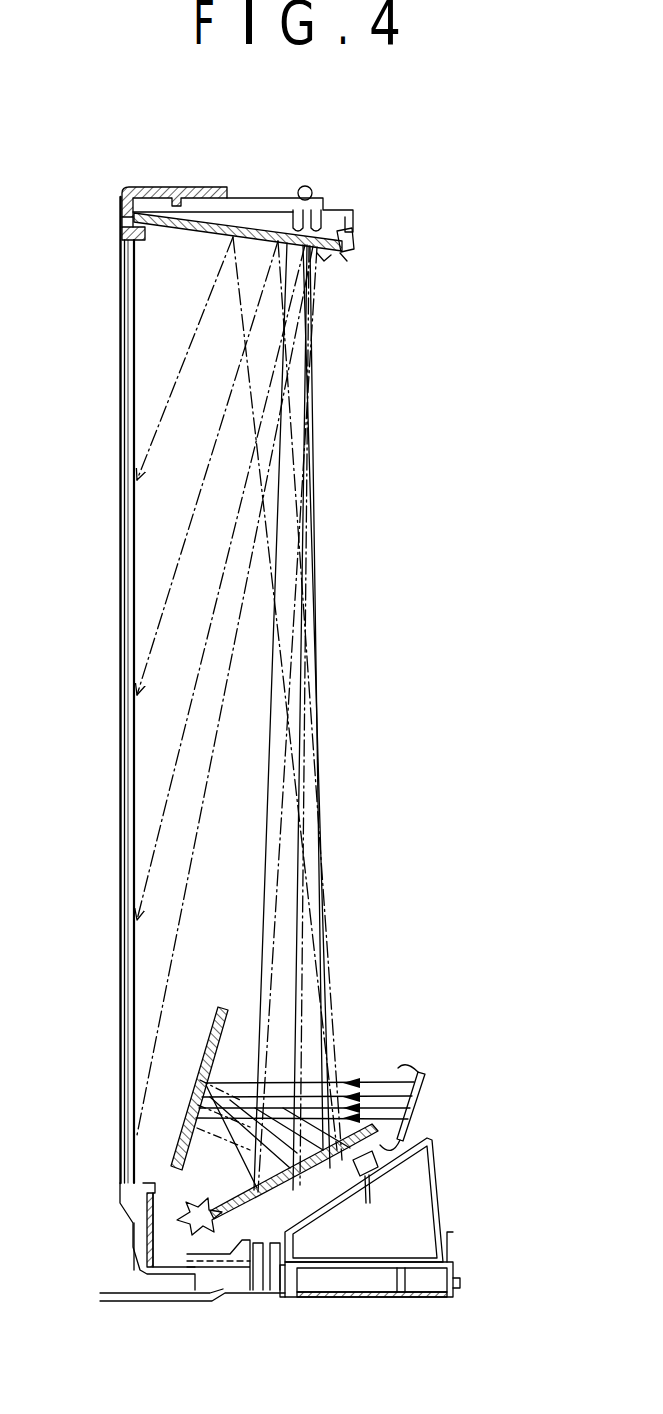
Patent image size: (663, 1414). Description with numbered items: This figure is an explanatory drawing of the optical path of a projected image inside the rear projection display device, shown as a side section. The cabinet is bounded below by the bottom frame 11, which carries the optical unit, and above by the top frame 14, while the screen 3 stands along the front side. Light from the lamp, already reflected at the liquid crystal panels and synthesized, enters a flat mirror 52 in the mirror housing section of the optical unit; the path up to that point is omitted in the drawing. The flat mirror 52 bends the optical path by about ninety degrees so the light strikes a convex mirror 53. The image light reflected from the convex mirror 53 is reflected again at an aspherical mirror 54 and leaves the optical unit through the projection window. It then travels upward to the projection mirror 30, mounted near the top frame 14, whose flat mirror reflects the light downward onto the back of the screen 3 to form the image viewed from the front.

The screen 3 is at (120, 382).
The bottom frame 11 is at (453, 1266).
The top frame 14 is at (162, 186).
The projection mirror 30 is at (366, 246).
The flat mirror 52 is at (413, 1069).
The convex mirror 53 is at (223, 1030).
The aspherical mirror 54 is at (400, 1145).